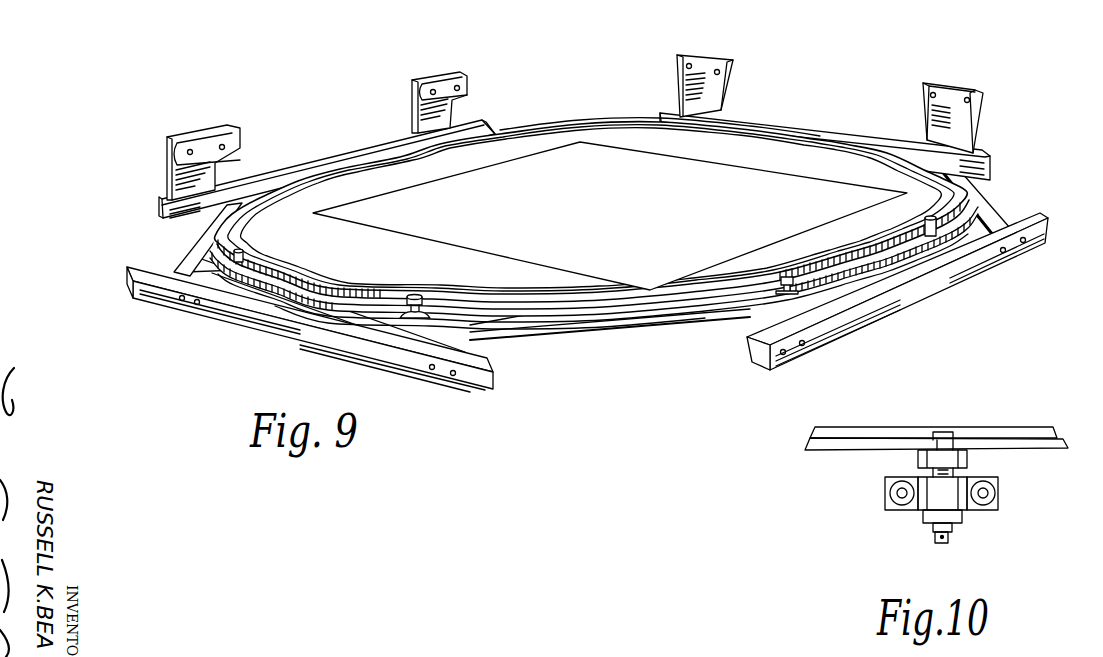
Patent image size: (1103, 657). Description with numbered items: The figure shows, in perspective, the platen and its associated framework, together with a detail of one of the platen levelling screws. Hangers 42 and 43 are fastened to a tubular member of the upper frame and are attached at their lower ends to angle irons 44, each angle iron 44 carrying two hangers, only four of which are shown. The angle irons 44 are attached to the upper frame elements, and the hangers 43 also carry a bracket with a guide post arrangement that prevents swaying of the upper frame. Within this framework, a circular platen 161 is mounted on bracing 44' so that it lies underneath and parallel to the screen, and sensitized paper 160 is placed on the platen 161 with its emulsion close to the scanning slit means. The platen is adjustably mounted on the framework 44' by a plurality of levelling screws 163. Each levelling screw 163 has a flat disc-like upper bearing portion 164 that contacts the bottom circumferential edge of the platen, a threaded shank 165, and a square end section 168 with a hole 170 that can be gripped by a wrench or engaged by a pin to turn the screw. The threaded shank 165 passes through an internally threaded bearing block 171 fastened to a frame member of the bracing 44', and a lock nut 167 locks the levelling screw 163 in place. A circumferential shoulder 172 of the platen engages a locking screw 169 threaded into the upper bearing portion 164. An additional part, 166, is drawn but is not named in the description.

In FIG. 9, the hanger 42 is at (417, 108).
In FIG. 9, the hanger 43 is at (183, 182).
In FIG. 9, the angle iron 44 is at (587, 242).
In FIG. 9, the bracing 44' is at (566, 268).
In FIG. 9, the sensitized paper 160 is at (712, 173).
In FIG. 9, the circular platen 161 is at (488, 152).
In FIG. 10, the circular platen 161 is at (1035, 433).
In FIG. 10, the leveling screw 163 is at (968, 463).
In FIG. 10, the upper bearing portion 164 is at (918, 460).
In FIG. 10, the threaded shank 165 is at (953, 472).
In FIG. 10, the bearing block 166 is at (967, 512).
In FIG. 10, the lock nut 167 is at (962, 520).
In FIG. 10, the square end section 168 is at (950, 540).
In FIG. 9, the locking screw 169 is at (424, 297).
In FIG. 10, the locking screw 169 is at (933, 435).
In FIG. 10, the hole 170 is at (937, 537).
In FIG. 10, the bearing block 171 is at (897, 512).
In FIG. 9, the circumferential shoulder 172 is at (947, 203).
In FIG. 10, the circumferential shoulder 172 is at (1060, 442).